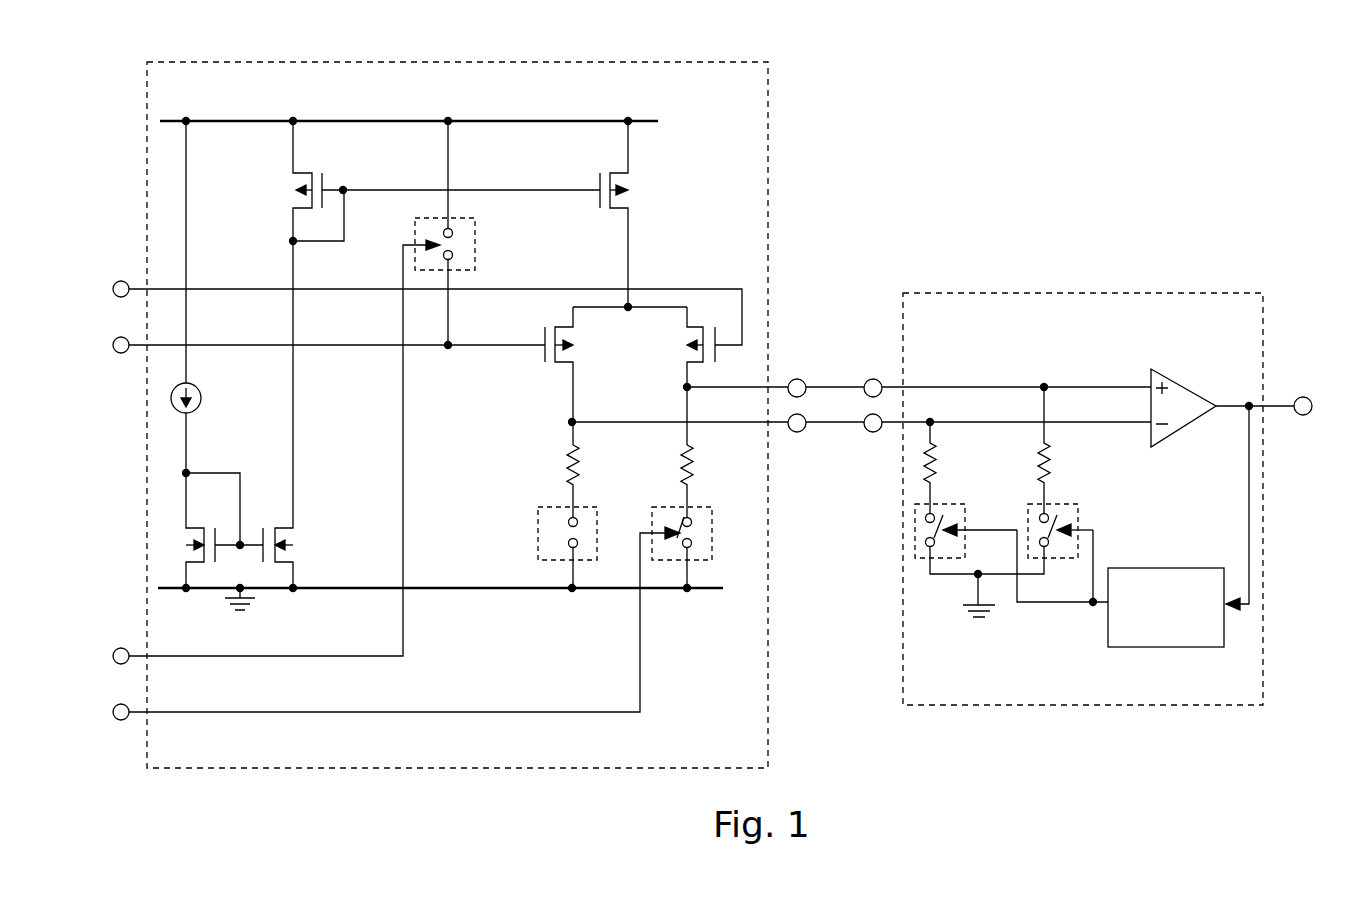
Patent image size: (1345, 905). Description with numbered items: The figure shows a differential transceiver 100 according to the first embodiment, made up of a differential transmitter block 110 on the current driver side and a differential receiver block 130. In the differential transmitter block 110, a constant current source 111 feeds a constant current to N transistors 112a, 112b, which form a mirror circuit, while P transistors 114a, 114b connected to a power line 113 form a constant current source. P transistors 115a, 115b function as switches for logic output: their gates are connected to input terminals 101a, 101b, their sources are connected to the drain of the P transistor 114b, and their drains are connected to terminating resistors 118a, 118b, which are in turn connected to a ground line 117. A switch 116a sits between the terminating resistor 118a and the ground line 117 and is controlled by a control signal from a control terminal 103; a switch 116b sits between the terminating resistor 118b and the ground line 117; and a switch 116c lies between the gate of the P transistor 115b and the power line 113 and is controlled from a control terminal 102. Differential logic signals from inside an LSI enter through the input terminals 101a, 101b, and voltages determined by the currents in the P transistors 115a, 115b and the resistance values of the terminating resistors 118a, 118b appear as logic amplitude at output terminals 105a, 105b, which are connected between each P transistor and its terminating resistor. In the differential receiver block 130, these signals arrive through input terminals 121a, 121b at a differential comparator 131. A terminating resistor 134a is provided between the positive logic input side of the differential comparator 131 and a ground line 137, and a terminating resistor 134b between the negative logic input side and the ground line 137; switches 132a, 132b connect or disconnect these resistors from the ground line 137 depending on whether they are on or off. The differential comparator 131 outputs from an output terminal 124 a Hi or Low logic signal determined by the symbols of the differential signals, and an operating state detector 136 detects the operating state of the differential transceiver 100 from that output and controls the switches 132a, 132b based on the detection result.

The differential transceiver 100 is at (862, 770).
The differential transmitter block 110 is at (610, 62).
The power line 113 is at (487, 120).
The ground line 117 is at (482, 591).
The input terminal 101a is at (121, 281).
The input terminal 101b is at (121, 353).
The control terminal 102 is at (121, 648).
The control terminal 103 is at (121, 720).
The constant current source 111 is at (201, 396).
The N transistor 112a is at (215, 510).
The N transistor 112b is at (290, 536).
The P transistor 114a is at (305, 173).
The P transistor 114b is at (625, 180).
The P transistor 115a is at (686, 358).
The P transistor 115b is at (553, 327).
The switch 116a is at (712, 522).
The switch 116b is at (538, 521).
The switch 116c is at (475, 246).
The terminating resistor 118a is at (694, 474).
The terminating resistor 118b is at (580, 474).
The output terminal 105a is at (800, 379).
The output terminal 105b is at (797, 432).
The input terminal 121a is at (873, 379).
The input terminal 121b is at (873, 432).
The differential receiver block 130 is at (1200, 293).
The differential comparator 131 is at (1190, 390).
The switch 132a is at (1072, 508).
The switch 132b is at (965, 514).
The terminating resistor 134a is at (1050, 470).
The terminating resistor 134b is at (938, 470).
The operating state detector 136 is at (1155, 568).
The ground line 137 is at (956, 578).
The output terminal 124 is at (1303, 397).